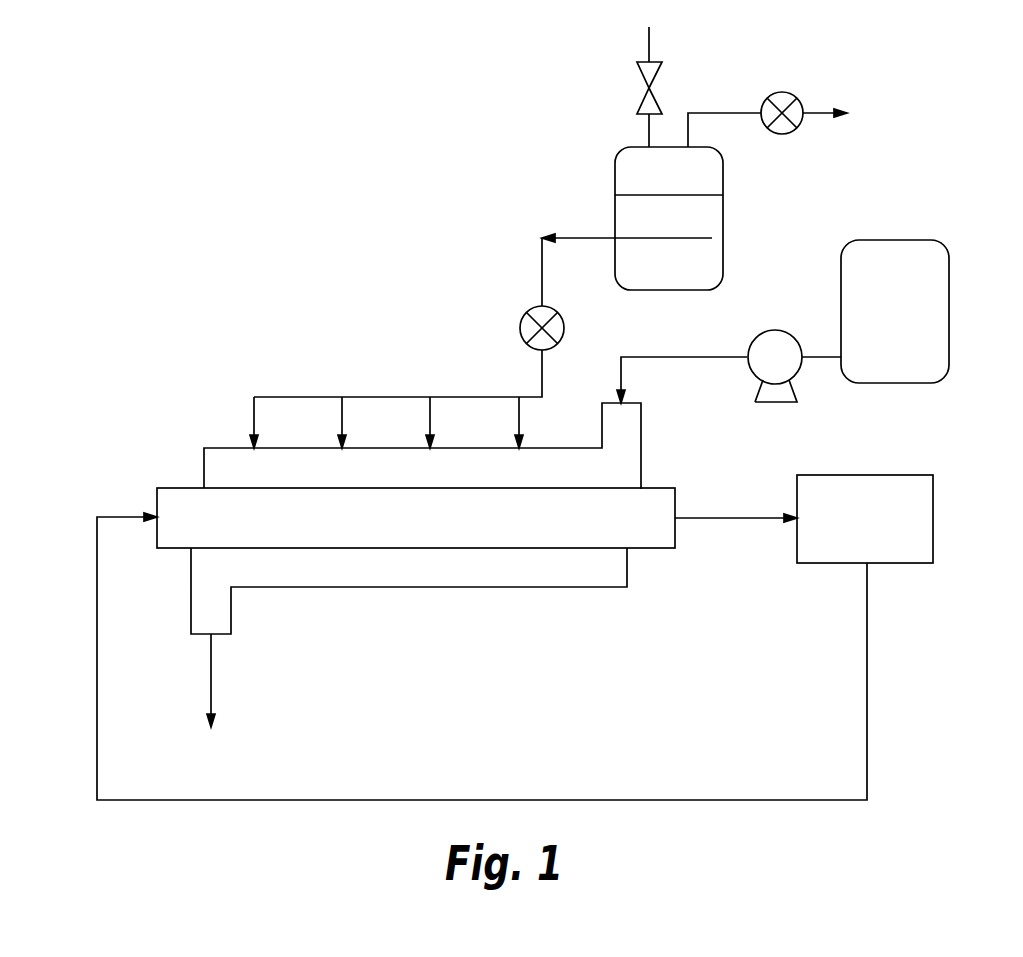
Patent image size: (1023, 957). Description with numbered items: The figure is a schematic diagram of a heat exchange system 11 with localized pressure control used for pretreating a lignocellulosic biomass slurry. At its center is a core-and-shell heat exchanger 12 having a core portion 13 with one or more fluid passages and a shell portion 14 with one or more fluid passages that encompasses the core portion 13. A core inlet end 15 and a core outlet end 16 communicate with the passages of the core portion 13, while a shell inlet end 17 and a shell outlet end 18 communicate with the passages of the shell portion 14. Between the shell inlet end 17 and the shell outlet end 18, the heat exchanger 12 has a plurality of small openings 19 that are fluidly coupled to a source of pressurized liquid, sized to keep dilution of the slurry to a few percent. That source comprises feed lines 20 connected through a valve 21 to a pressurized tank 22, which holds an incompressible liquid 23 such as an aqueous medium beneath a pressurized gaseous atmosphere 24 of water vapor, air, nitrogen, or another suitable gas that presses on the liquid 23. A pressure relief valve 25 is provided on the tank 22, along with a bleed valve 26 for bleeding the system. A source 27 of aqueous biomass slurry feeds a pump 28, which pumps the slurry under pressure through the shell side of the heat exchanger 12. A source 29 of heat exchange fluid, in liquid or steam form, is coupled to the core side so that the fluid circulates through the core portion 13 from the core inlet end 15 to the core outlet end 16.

The heat exchange system 11 is at (324, 131).
The core-and-shell heat exchanger 12 is at (204, 458).
The core portion 13 is at (364, 534).
The shell portion 14 is at (421, 579).
The core inlet end 15 is at (138, 501).
The core outlet end 16 is at (692, 543).
The shell inlet end 17 is at (641, 385).
The shell outlet end 18 is at (225, 655).
The openings 19 is at (270, 438).
The feed lines 20 is at (380, 397).
The valve 21 is at (522, 320).
The pressurized tank 22 is at (725, 150).
The incompressible liquid 23 is at (677, 229).
The pressurized gaseous atmosphere 24 is at (677, 184).
The pressure relief valve 25 is at (645, 84).
The bleed valve 26 is at (780, 94).
The source of aqueous slurry 27 is at (950, 260).
The pump 28 is at (792, 383).
The source of heat exchange fluid 29 is at (933, 518).